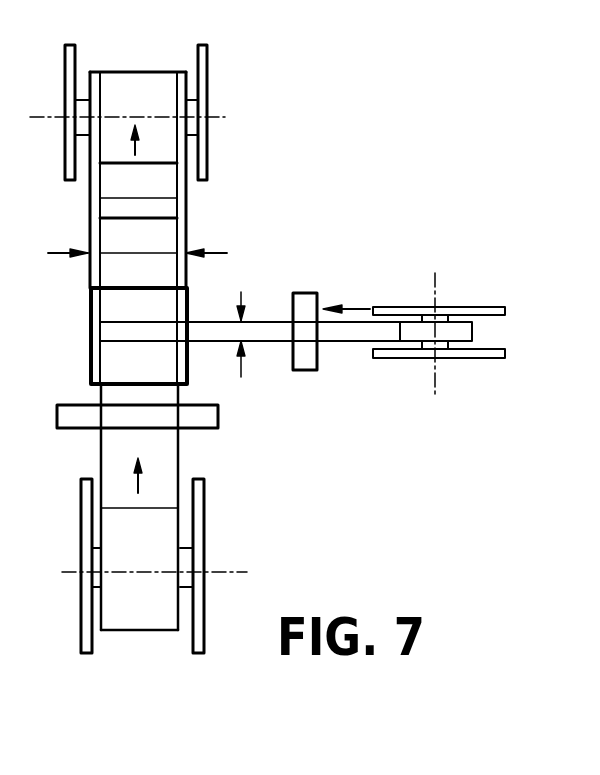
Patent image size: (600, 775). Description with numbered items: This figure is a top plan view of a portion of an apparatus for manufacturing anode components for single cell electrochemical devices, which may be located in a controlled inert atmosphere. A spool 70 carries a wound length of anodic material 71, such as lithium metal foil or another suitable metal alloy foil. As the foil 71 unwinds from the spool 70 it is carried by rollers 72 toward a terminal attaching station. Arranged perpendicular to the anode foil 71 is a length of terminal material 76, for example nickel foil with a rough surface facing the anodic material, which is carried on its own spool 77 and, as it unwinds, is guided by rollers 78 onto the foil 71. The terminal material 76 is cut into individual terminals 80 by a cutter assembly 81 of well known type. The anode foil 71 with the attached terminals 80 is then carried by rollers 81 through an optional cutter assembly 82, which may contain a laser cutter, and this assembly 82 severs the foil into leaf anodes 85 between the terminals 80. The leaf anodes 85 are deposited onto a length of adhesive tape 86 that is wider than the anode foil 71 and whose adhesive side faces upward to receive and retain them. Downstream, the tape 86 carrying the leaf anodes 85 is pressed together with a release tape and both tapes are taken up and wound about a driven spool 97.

The spool 70 is at (197, 512).
The anodic material 71 is at (167, 451).
The rollers 72 is at (200, 417).
The terminal material 76 is at (358, 330).
The spool 77 is at (472, 355).
The rollers 78 is at (303, 300).
The terminals 80 is at (187, 332).
The cutter assembly 81 is at (273, 294).
The cutter assembly 82 is at (50, 290).
The leaf anodes 85 is at (163, 207).
The adhesive tape 86 is at (122, 181).
The driven spool 97 is at (207, 80).